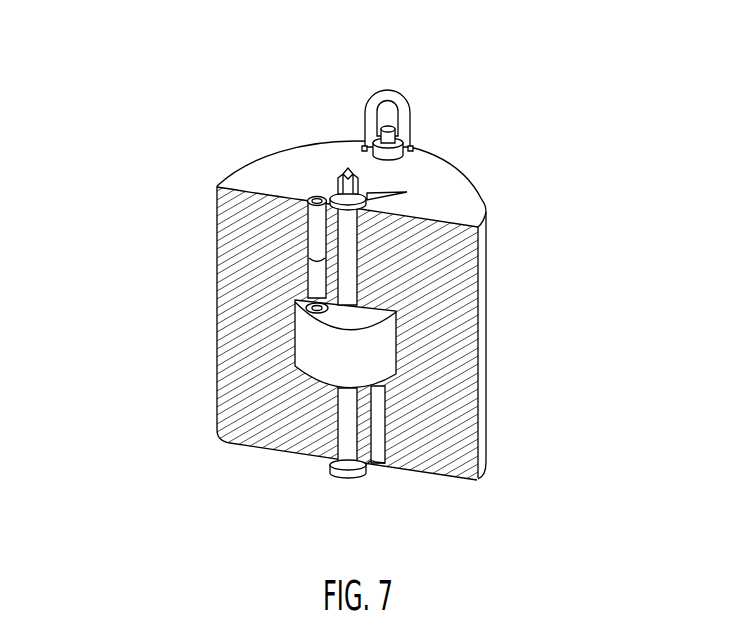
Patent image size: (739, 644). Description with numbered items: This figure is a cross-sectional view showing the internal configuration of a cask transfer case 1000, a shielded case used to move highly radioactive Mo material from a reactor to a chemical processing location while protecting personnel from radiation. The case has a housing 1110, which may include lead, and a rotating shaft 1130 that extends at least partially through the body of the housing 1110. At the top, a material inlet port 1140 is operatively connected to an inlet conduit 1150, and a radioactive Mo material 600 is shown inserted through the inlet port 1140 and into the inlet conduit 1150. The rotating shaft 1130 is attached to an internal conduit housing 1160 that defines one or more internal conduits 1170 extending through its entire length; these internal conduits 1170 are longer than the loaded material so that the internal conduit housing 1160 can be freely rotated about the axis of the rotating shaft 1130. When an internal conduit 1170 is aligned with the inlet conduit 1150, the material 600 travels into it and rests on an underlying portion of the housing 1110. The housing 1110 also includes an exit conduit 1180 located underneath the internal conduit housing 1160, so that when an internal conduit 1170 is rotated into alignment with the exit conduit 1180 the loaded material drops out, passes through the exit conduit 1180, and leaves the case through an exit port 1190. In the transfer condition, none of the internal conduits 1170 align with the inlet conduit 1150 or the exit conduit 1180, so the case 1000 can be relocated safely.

The cask transfer case 1000 is at (517, 99).
The housing 1110 is at (477, 316).
The rotating shaft 1130 is at (355, 244).
The material inlet port 1140 is at (308, 197).
The radioactive Mo material 600 is at (308, 228).
The inlet conduit 1150 is at (309, 276).
The internal conduit housing 1160 is at (380, 357).
The internal conduits 1170 is at (296, 308).
The exit conduit 1180 is at (380, 434).
The exit port 1190 is at (377, 465).